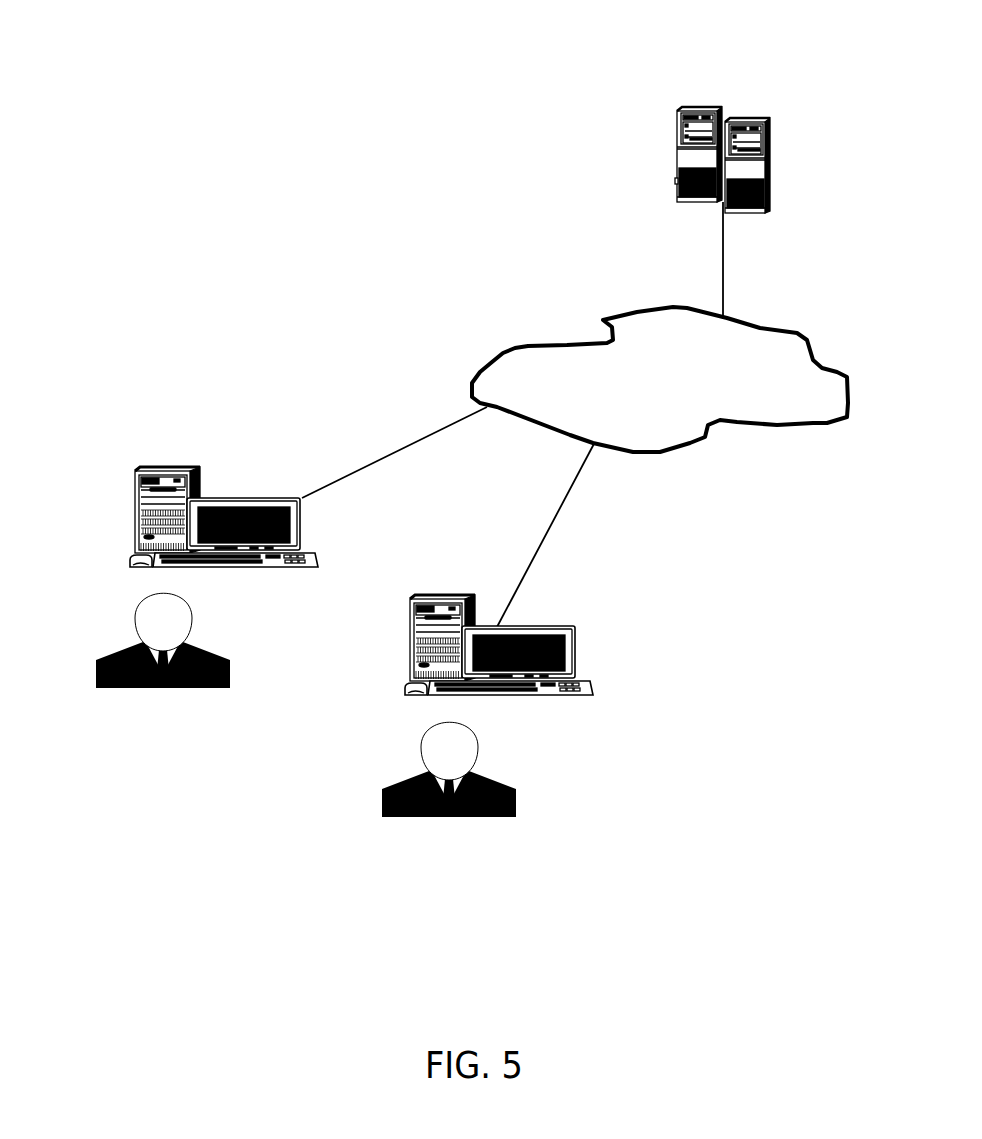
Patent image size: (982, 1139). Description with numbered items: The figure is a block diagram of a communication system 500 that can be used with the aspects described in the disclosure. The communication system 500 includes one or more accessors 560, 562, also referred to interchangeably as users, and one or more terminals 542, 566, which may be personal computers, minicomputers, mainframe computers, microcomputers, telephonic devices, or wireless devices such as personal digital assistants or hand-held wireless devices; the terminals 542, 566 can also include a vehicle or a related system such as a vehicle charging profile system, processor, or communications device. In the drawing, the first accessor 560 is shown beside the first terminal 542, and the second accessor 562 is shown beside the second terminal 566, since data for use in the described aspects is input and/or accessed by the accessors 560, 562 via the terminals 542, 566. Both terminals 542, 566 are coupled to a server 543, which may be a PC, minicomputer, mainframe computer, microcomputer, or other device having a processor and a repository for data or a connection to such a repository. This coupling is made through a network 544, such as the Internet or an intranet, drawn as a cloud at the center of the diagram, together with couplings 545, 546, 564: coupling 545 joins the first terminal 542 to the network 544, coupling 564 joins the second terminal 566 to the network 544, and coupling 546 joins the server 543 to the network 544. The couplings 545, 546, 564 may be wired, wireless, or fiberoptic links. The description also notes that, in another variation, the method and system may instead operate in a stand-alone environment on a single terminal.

The communication system 500 is at (180, 66).
The terminal 542 is at (165, 468).
The server 543 is at (703, 105).
The network 544 is at (528, 347).
The coupling 545 is at (345, 480).
The coupling 546 is at (723, 273).
The accessor 560 is at (125, 647).
The accessor 562 is at (495, 782).
The coupling 564 is at (568, 492).
The terminal 566 is at (575, 627).